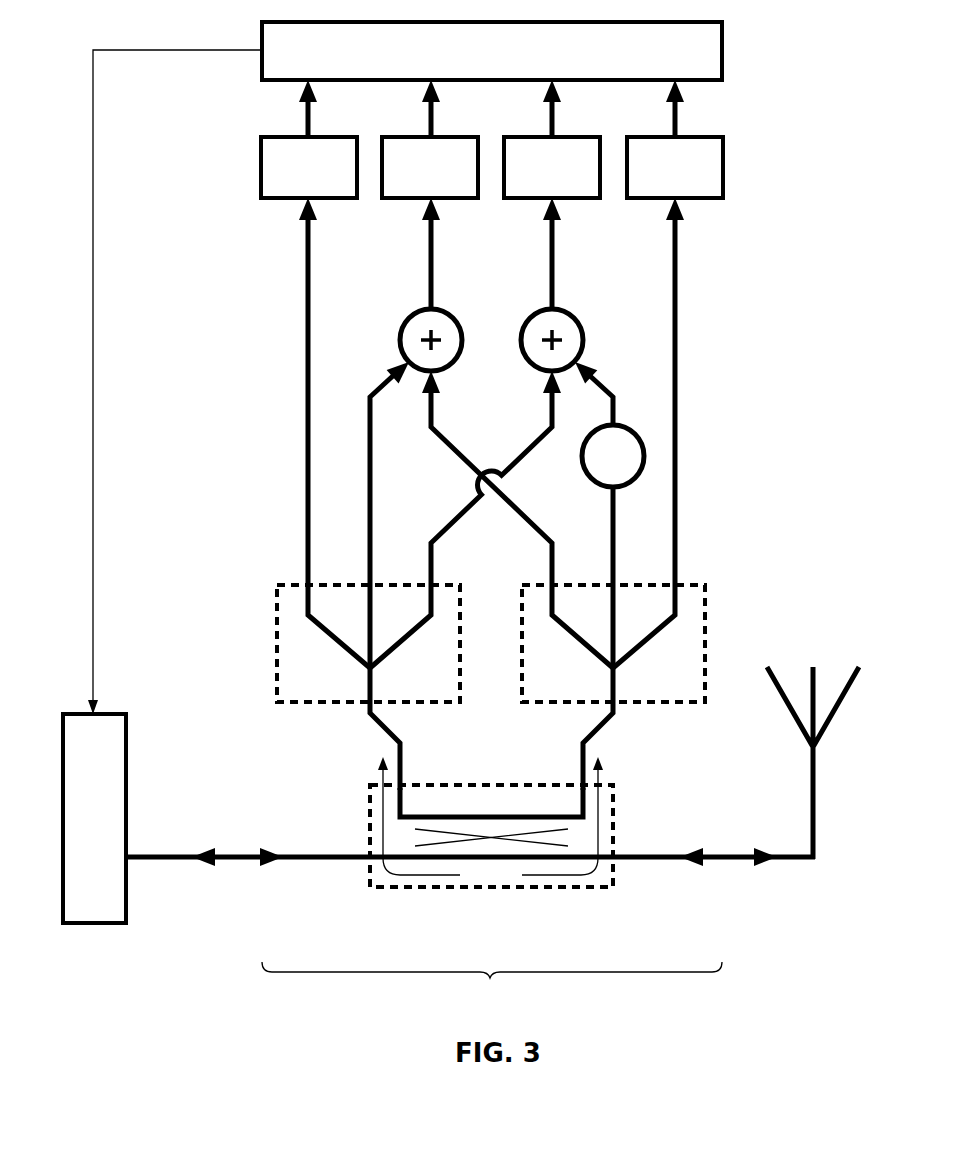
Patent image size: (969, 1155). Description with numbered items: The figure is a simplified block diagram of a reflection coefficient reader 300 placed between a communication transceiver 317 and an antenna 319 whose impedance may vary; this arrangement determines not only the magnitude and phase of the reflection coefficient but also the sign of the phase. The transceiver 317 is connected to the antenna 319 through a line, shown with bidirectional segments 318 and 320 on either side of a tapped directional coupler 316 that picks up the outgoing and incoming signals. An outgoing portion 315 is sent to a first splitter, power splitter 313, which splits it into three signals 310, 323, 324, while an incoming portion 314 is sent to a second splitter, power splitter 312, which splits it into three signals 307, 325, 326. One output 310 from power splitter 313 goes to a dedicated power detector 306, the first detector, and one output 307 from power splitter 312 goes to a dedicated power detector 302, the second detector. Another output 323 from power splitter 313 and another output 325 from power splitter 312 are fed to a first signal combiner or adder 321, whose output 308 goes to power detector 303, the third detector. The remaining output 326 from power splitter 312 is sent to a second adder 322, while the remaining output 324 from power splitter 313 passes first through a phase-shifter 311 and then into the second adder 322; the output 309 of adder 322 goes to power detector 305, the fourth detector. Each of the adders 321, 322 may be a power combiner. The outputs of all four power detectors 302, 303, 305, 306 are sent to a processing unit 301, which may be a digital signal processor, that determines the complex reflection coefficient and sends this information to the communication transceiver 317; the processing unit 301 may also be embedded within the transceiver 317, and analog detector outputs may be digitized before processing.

The reflection coefficient reader 300 is at (492, 986).
The processing unit 301 is at (722, 50).
The power detector 302 is at (282, 198).
The power detector 303 is at (460, 198).
The power detector 305 is at (597, 198).
The power detector 306 is at (713, 198).
The output of power splitter 312 307 is at (305, 427).
The output of adder 321 308 is at (431, 268).
The output of adder 322 309 is at (552, 277).
The output of power splitter 313 310 is at (677, 423).
The phase-shifter 311 is at (594, 480).
The power splitter 312 is at (277, 598).
The power splitter 313 is at (705, 597).
The incoming portion 314 is at (382, 735).
The outgoing portion 315 is at (602, 730).
The tapped directional coupler 316 is at (380, 888).
The communication transceiver 317 is at (126, 728).
The transmission line 318 is at (237, 853).
The antenna 319 is at (807, 668).
The transmission line 320 is at (720, 853).
The adder 321 is at (398, 338).
The adder 322 is at (585, 342).
The output of power splitter 313 323 is at (563, 525).
The output of power splitter 313 324 is at (642, 523).
The output of power splitter 312 325 is at (372, 503).
The output of power splitter 312 326 is at (433, 560).